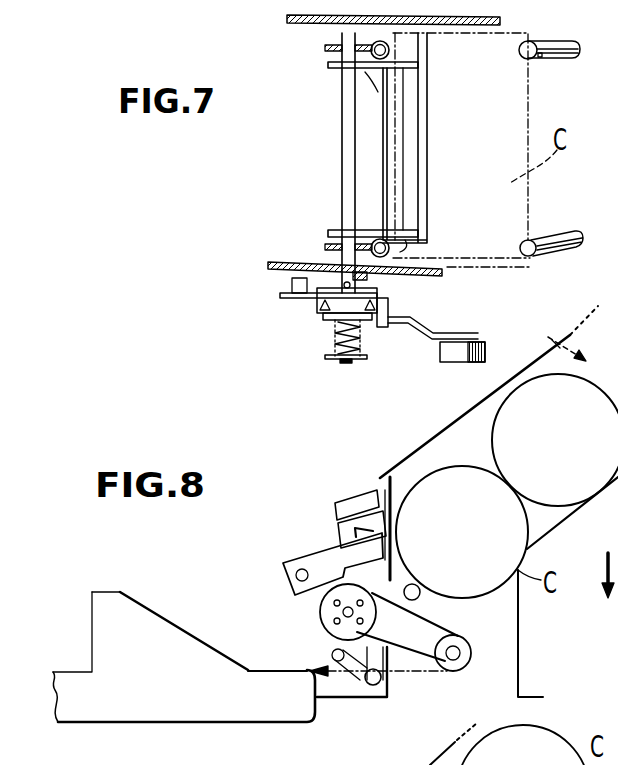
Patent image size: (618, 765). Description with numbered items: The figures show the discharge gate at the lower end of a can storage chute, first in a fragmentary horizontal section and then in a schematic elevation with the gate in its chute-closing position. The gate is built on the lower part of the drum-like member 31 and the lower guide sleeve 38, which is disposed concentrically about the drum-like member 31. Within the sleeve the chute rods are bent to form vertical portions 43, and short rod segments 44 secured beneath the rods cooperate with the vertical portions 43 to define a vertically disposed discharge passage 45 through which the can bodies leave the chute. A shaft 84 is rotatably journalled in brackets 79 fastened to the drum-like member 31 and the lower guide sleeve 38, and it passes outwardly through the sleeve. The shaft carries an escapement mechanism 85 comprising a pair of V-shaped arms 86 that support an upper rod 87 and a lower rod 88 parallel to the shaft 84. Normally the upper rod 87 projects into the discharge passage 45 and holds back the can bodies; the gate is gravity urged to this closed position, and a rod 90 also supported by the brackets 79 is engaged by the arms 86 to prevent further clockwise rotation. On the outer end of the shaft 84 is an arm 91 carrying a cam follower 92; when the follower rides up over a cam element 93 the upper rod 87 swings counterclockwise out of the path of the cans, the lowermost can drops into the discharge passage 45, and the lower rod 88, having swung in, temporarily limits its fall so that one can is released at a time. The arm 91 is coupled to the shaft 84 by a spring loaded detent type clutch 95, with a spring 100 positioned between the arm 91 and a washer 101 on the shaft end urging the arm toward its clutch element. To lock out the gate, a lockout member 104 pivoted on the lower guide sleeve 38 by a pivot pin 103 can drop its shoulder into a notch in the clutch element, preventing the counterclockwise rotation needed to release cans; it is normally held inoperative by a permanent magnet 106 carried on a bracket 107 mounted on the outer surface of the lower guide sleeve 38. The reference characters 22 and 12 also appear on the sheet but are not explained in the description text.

In FIG. 7, the drum-like member 31 is at (287, 17).
In FIG. 7, the lower guide sleeve 38 is at (268, 265).
In FIG. 7, the vertical portions of the rods 43 is at (537, 52).
In FIG. 7, the rod segment 44 is at (393, 52).
In FIG. 7, the brackets 79 is at (330, 44).
In FIG. 7, the shaft 84 is at (342, 156).
In FIG. 7, the escapement mechanism 85 is at (428, 141).
In FIG. 7, the V-shaped arms 86 is at (365, 72).
In FIG. 7, the upper rod 87 is at (416, 163).
In FIG. 8, the upper rod 87 is at (428, 595).
In FIG. 7, the lower rod 88 is at (380, 95).
In FIG. 8, the lower rod 88 is at (378, 698).
In FIG. 7, the arm 91 is at (413, 327).
In FIG. 8, the arm 91 is at (413, 640).
In FIG. 7, the cam follower 92 is at (457, 357).
In FIG. 8, the cam follower 92 is at (470, 648).
In FIG. 7, the spring loaded detent type clutch 95 is at (314, 311).
In FIG. 7, the spring 100 is at (333, 337).
In FIG. 7, the washer 101 is at (327, 360).
In FIG. 7, the direction of travel arrow 22 is at (561, 334).
In FIG. 8, the discharge passage 45 is at (490, 658).
In FIG. 8, the rod 90 is at (337, 653).
In FIG. 8, the cam element 93 is at (173, 638).
In FIG. 8, the pivot pin 103 is at (300, 564).
In FIG. 8, the lockout member 104 is at (342, 547).
In FIG. 8, the permanent magnet 106 is at (340, 528).
In FIG. 8, the bracket 107 is at (360, 497).
In FIG. 8, the direction arrow 12 is at (609, 589).